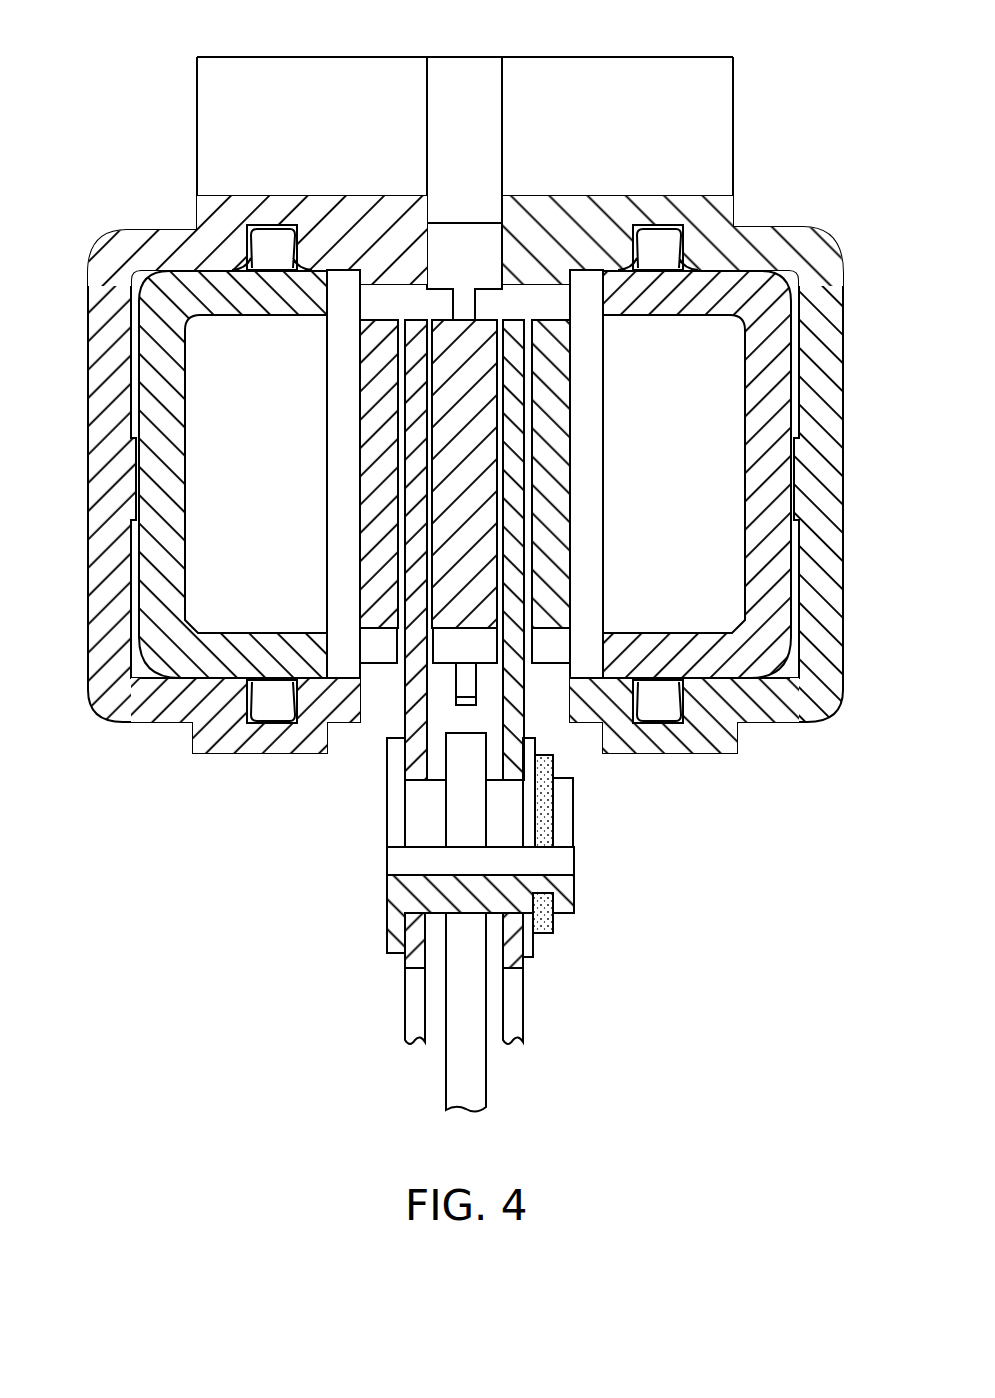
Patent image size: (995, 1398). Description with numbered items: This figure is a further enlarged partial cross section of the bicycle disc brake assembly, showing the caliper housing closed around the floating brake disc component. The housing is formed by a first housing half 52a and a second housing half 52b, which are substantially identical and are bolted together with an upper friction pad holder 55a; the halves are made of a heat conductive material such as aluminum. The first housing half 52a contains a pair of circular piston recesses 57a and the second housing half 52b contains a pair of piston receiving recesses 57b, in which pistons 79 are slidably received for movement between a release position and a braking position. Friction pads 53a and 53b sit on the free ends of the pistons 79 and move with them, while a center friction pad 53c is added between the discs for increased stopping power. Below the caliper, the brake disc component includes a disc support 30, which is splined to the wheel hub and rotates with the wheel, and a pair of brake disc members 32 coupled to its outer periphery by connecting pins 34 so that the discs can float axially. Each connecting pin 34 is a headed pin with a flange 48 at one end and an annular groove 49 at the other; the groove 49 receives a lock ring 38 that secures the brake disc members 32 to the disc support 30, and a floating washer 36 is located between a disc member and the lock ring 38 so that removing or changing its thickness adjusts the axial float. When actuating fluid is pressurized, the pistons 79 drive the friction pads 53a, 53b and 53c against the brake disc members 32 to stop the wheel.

The upper friction pad holder 55a is at (456, 92).
The second housing half 52b is at (103, 242).
The first housing half 52a is at (830, 242).
The piston receiving recesses 57b is at (153, 272).
The circular piston recesses 57a is at (778, 278).
The pistons 79 is at (177, 657).
The friction pad 53b is at (347, 472).
The center friction pad 53c is at (483, 400).
The friction pad 53a is at (565, 468).
The brake disc members 32 is at (402, 703).
The connecting pins 34 is at (385, 887).
The annular groove 49 is at (548, 887).
The lock rings 38 is at (555, 925).
The floating washers 36 is at (545, 955).
The flange 48 is at (405, 957).
The disc support 30 is at (487, 1078).